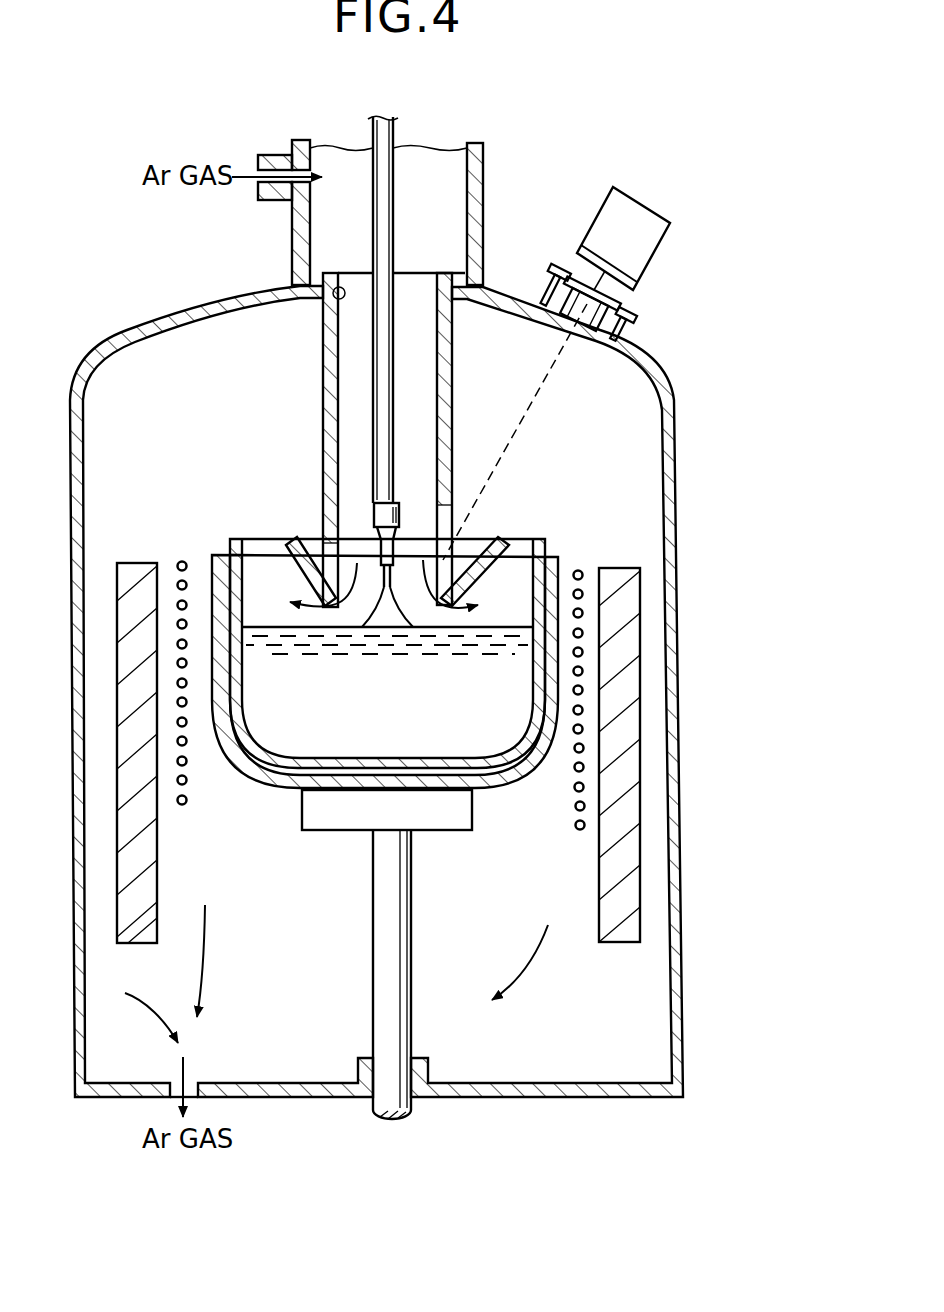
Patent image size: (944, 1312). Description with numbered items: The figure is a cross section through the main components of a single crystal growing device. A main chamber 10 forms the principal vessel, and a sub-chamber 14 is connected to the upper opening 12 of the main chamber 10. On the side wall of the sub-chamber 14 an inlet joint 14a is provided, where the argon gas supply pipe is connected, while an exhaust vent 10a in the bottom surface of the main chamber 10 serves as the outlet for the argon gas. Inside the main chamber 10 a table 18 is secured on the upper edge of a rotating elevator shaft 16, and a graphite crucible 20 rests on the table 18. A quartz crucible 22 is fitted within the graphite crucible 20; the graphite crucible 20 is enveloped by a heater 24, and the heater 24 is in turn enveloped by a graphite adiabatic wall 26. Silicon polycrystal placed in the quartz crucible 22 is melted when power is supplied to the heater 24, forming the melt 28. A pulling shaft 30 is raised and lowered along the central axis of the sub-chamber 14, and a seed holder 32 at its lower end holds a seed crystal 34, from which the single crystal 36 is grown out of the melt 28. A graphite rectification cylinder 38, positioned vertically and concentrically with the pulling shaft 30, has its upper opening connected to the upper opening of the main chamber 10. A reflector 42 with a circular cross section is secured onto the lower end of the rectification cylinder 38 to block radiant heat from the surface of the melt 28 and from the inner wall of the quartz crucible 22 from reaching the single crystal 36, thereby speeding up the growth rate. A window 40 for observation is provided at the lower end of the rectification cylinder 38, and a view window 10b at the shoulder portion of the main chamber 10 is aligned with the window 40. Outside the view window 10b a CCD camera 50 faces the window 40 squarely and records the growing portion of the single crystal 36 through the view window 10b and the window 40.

The main chamber 10 is at (676, 508).
The exhaust vent 10a is at (192, 1084).
The view window 10b is at (605, 298).
The upper opening 12 is at (323, 303).
The sub-chamber 14 is at (483, 183).
The inlet joint 14a is at (273, 156).
The rotating elevator shaft 16 is at (413, 918).
The table 18 is at (473, 816).
The graphite crucible 20 is at (553, 550).
The quartz crucible 22 is at (542, 553).
The heater 24 is at (578, 831).
The graphite adiabatic wall 26 is at (620, 943).
The melt 28 is at (512, 628).
The pulling shaft 30 is at (392, 243).
The seed holder 32 is at (398, 508).
The seed crystal 34 is at (390, 582).
The single crystal 36 is at (377, 595).
The graphite rectification cylinder 38 is at (448, 387).
The window 40 is at (459, 488).
The reflector 42 is at (290, 545).
The CCD camera 50 is at (660, 246).